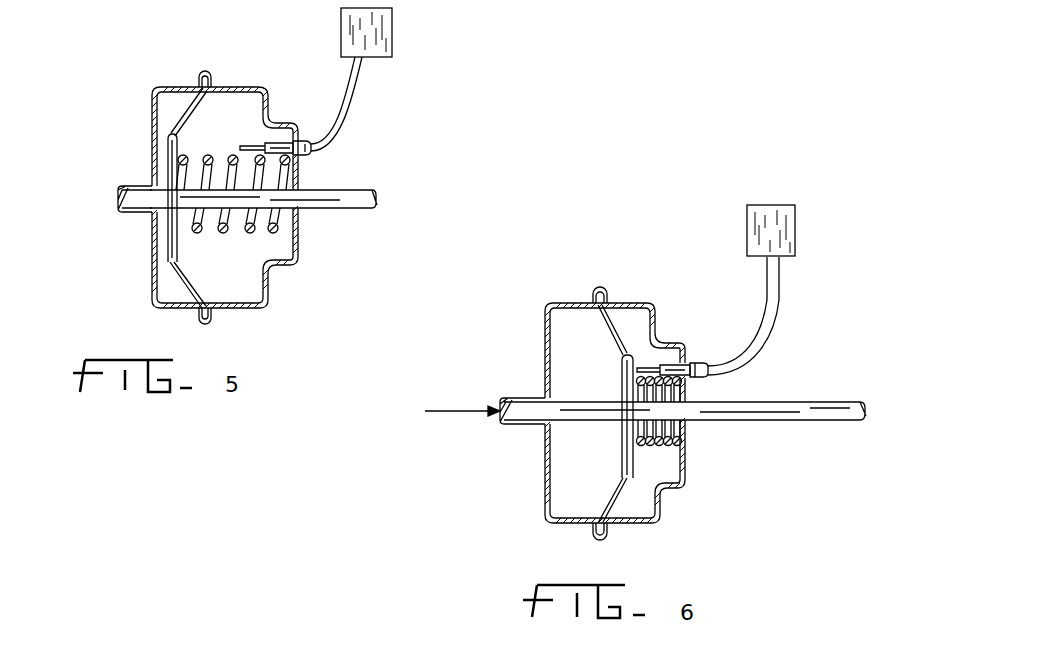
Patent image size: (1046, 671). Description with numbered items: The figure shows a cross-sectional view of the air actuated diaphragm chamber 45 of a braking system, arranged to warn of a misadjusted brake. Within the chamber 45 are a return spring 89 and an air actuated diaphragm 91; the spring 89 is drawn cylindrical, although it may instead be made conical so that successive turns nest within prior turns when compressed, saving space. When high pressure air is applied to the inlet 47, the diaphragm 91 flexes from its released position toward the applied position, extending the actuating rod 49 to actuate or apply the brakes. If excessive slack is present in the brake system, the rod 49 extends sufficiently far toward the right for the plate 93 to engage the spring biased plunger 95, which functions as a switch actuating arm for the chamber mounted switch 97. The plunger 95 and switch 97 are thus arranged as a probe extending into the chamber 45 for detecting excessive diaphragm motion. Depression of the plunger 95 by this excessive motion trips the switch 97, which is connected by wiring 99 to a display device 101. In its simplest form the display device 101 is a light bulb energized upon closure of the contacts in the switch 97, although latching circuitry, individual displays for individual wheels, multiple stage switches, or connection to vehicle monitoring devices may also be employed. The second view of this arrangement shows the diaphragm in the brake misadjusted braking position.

In FIG. 5, the chamber 45 is at (185, 87).
In FIG. 6, the chamber 45 is at (570, 303).
In FIG. 5, the inlet 47 is at (130, 188).
In FIG. 6, the inlet 47 is at (508, 424).
In FIG. 5, the actuating rod 49 is at (345, 205).
In FIG. 6, the actuating rod 49 is at (790, 416).
In FIG. 5, the return spring 89 is at (203, 233).
In FIG. 6, the return spring 89 is at (660, 448).
In FIG. 5, the air actuated diaphragm 91 is at (178, 118).
In FIG. 6, the air actuated diaphragm 91 is at (612, 325).
In FIG. 5, the plate 93 is at (178, 148).
In FIG. 6, the plate 93 is at (627, 416).
In FIG. 5, the spring biased plunger 95 is at (246, 145).
In FIG. 6, the spring biased plunger 95 is at (663, 370).
In FIG. 5, the chamber mounted switch 97 is at (310, 152).
In FIG. 6, the chamber mounted switch 97 is at (699, 370).
In FIG. 5, the wiring 99 is at (360, 97).
In FIG. 6, the wiring 99 is at (779, 290).
In FIG. 5, the display device 101 is at (375, 28).
In FIG. 6, the display device 101 is at (785, 232).